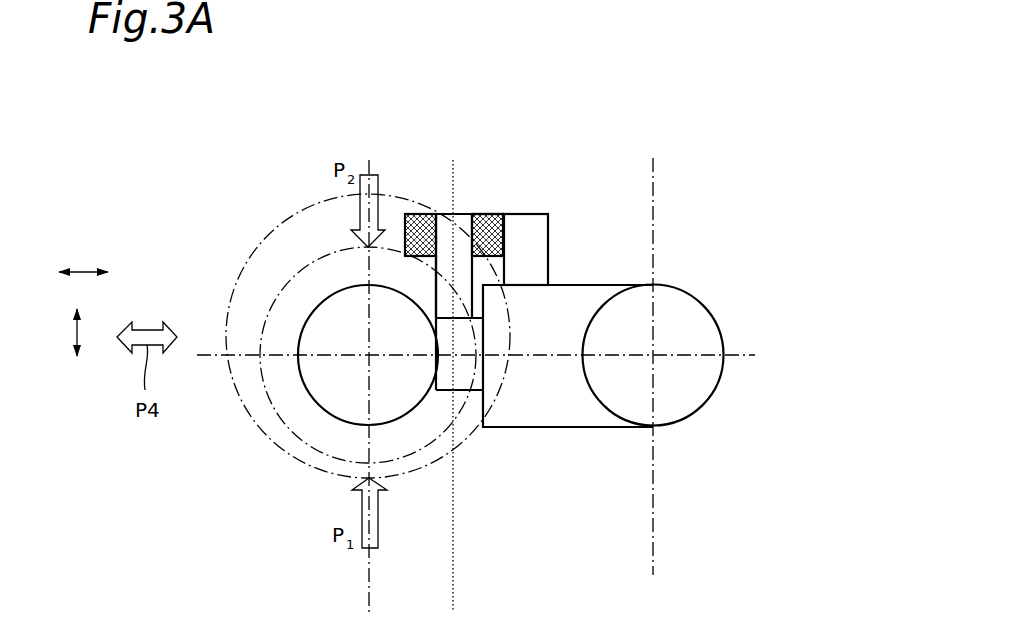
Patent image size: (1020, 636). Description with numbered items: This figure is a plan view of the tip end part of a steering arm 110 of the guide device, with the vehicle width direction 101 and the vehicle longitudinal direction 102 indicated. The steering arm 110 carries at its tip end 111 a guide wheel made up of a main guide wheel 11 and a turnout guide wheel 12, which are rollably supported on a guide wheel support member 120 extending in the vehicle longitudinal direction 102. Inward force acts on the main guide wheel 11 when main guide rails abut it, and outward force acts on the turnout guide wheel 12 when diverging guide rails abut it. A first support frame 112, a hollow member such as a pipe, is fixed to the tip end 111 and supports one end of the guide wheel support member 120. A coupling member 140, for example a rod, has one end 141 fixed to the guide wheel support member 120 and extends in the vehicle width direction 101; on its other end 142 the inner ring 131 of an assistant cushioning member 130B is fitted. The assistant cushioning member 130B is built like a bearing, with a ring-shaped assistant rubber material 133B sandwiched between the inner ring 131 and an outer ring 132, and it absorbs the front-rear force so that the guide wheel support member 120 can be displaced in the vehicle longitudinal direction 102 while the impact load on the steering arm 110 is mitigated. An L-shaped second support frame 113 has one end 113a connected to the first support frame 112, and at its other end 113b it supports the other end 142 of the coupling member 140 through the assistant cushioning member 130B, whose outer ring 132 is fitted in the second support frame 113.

The main guide wheel 11 is at (282, 450).
The turnout guide wheel 12 is at (330, 253).
The vehicle width direction 101 is at (83, 330).
The vehicle longitudinal direction 102 is at (83, 268).
The steering arm 110 is at (644, 394).
The tip end 111 is at (693, 373).
The first support frame 112 is at (577, 413).
The second support frame 113 is at (552, 232).
The one end 113a is at (527, 273).
The other end 113b is at (518, 246).
The guide wheel support member 120 is at (458, 378).
The assistant cushioning member 130B is at (495, 205).
The inner ring 131 is at (468, 213).
The outer ring 132 is at (512, 240).
The assistant rubber material 133B is at (513, 213).
The coupling member 140 is at (431, 282).
The one end 141 is at (437, 318).
The other end 142 is at (447, 232).